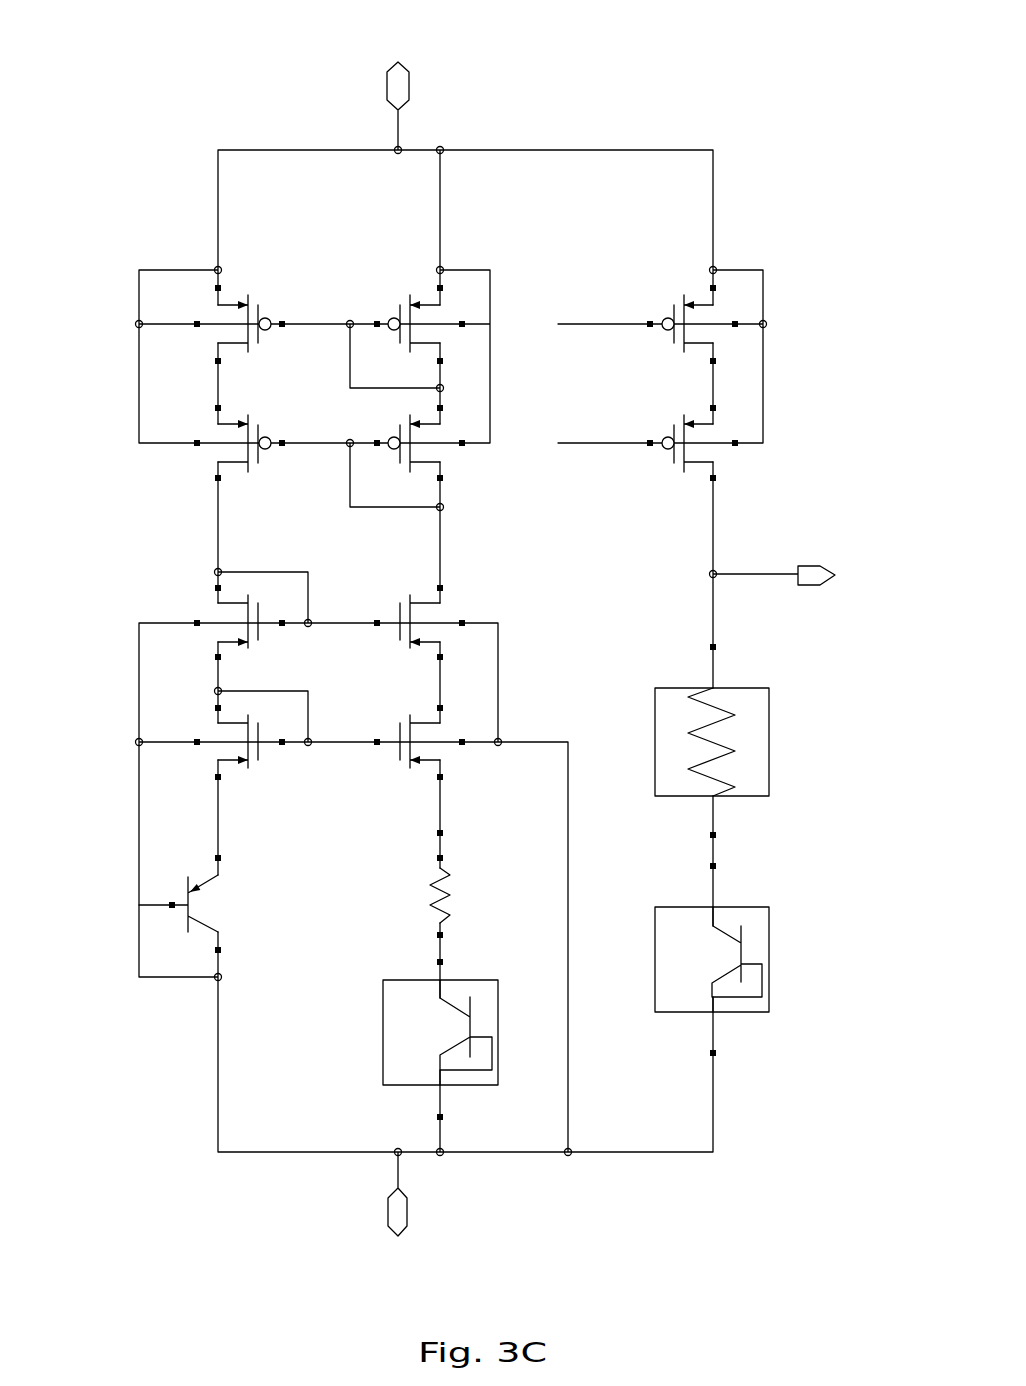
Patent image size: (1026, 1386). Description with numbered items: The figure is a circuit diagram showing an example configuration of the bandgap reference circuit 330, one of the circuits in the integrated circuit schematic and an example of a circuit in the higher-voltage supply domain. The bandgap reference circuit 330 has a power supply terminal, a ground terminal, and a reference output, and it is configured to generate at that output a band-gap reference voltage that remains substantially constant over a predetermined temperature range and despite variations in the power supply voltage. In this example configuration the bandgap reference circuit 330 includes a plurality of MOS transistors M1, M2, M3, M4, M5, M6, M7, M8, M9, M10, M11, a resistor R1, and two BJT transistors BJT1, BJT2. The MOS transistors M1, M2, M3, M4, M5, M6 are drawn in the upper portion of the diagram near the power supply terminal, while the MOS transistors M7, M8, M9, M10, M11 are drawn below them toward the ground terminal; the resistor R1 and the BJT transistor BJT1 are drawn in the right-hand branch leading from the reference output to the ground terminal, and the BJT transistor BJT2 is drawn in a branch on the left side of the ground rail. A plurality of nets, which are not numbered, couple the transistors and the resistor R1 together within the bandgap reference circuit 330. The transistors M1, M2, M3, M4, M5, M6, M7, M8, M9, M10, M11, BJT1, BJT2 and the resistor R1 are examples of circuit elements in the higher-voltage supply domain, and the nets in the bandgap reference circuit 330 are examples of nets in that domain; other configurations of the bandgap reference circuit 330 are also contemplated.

The bandgap reference circuit 330 is at (95, 39).
The MOS transistor M1 is at (256, 335).
The MOS transistor M2 is at (402, 335).
The MOS transistor M3 is at (676, 335).
The MOS transistor M4 is at (256, 455).
The MOS transistor M5 is at (402, 455).
The MOS transistor M6 is at (676, 455).
The MOS transistor M7 is at (256, 634).
The MOS transistor M8 is at (402, 634).
The MOS transistor M9 is at (256, 754).
The MOS transistor M10 is at (396, 754).
The MOS transistor M11 is at (204, 903).
The resistor R1 is at (769, 738).
The BJT transistor BJT1 is at (769, 938).
The BJT transistor BJT2 is at (383, 1036).